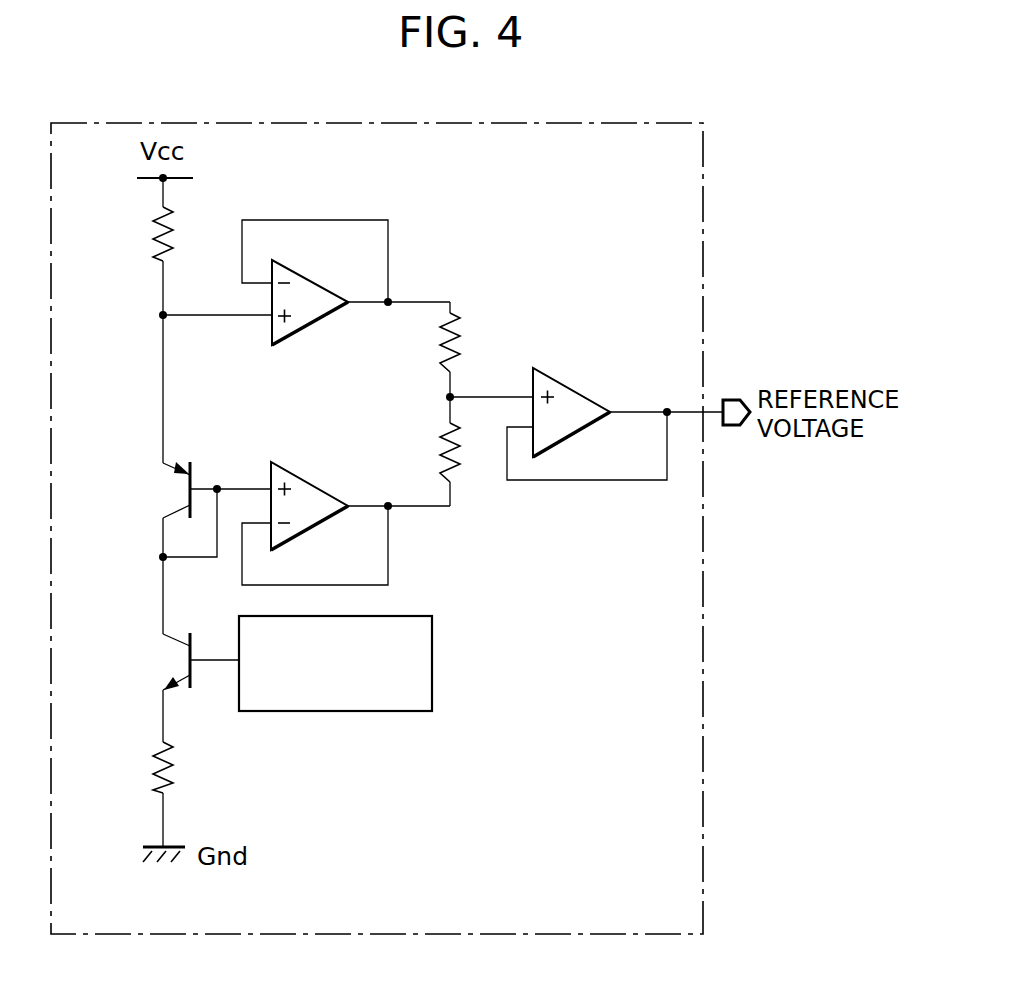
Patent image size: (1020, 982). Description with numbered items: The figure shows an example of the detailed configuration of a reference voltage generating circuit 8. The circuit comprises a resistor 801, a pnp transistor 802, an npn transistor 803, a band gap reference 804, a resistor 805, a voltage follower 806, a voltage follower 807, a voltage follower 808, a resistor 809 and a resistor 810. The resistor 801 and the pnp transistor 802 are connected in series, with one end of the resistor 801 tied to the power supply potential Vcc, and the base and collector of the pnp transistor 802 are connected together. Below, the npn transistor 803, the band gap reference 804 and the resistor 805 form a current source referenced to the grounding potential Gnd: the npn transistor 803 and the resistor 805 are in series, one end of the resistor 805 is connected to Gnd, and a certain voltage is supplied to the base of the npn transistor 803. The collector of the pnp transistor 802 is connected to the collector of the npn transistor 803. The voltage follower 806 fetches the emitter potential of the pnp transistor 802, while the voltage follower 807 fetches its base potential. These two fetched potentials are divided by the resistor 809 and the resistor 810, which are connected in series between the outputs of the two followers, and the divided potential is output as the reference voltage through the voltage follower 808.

The reference voltage generating circuit 8 is at (703, 203).
The resistor 801 is at (152, 248).
The pnp transistor 802 is at (163, 493).
The npn transistor 803 is at (160, 660).
The band gap reference 804 is at (345, 711).
The resistor 805 is at (175, 765).
The voltage follower 806 is at (310, 277).
The voltage follower 807 is at (283, 461).
The voltage follower 808 is at (577, 390).
The resistor 809 is at (457, 339).
The resistor 810 is at (445, 436).